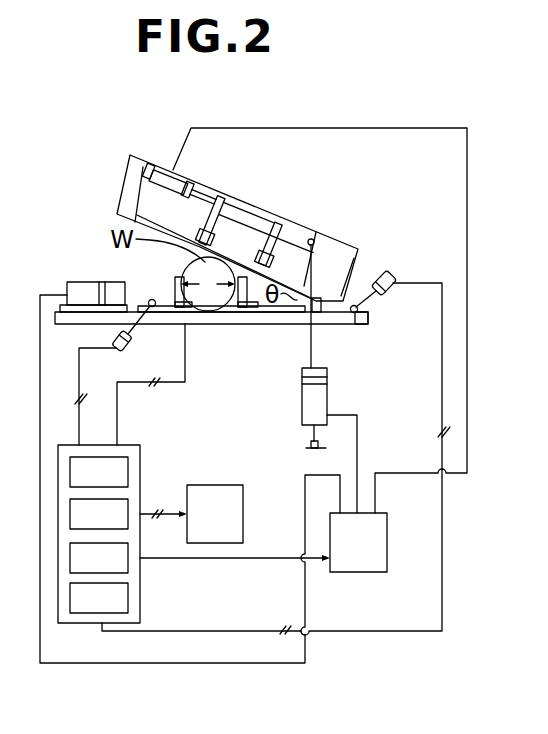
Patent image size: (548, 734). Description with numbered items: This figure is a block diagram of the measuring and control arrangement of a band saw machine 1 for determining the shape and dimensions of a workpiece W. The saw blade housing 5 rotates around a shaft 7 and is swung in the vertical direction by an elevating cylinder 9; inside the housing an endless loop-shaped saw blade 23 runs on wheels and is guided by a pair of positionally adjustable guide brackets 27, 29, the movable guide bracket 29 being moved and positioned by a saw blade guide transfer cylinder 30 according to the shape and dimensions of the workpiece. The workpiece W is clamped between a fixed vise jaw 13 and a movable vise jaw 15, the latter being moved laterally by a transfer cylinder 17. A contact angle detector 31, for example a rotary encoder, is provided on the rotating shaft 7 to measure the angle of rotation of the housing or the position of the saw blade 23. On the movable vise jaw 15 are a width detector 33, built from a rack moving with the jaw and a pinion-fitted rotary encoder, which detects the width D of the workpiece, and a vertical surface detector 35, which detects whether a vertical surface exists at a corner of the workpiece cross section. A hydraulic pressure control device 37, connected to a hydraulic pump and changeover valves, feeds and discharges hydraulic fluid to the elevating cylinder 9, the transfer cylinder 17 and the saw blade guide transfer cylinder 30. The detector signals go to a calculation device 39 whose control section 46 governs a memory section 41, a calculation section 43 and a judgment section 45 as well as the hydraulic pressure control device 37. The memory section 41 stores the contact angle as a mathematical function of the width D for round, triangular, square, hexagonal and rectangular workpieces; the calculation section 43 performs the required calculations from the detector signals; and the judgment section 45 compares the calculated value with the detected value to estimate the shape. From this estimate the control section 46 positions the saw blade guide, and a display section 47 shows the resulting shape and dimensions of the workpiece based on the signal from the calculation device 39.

The band saw machine 1 is at (257, 158).
The saw blade housing 5 is at (346, 237).
The shaft 7 is at (354, 314).
The elevating cylinder 9 is at (300, 403).
The fixed vise jaw 13 is at (243, 283).
The movable vise jaw 15 is at (177, 280).
The transfer cylinder 17 is at (74, 283).
The saw blade 23 is at (195, 179).
The guide bracket 27 is at (283, 216).
The movable guide bracket 29 is at (222, 203).
The saw blade guide transfer cylinder 30 is at (155, 166).
The contact angle detector 31 is at (394, 270).
The width detector 33 is at (136, 333).
The vertical surface detector 35 is at (187, 312).
The hydraulic pressure control device 37 is at (388, 545).
The calculation device 39 is at (133, 534).
The memory section 41 is at (99, 472).
The calculation section 43 is at (99, 514).
The judgment section 45 is at (99, 558).
The control section 46 is at (99, 598).
The display section 47 is at (245, 517).